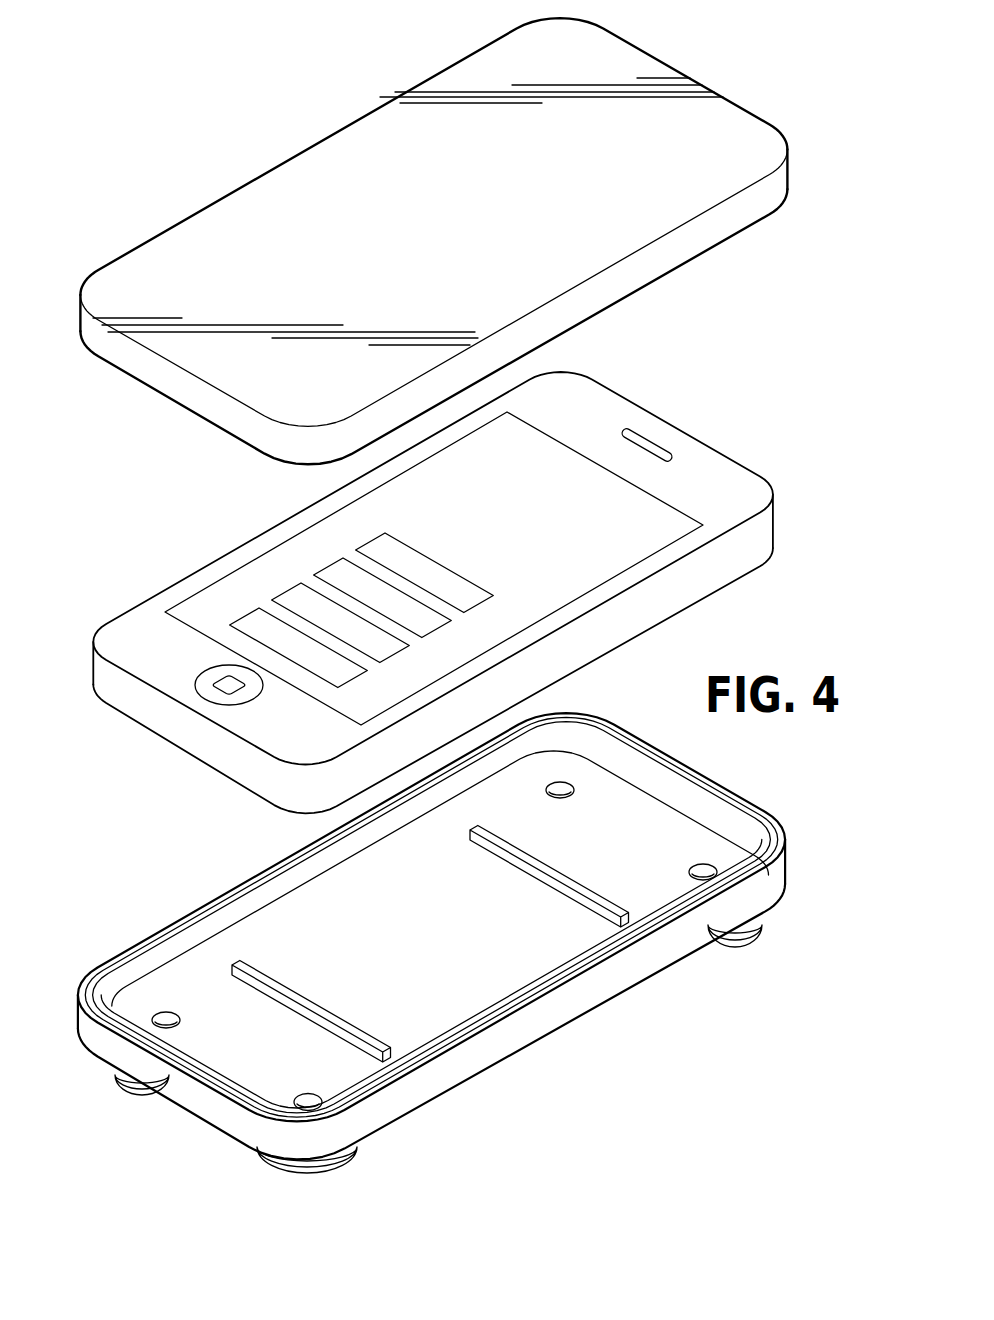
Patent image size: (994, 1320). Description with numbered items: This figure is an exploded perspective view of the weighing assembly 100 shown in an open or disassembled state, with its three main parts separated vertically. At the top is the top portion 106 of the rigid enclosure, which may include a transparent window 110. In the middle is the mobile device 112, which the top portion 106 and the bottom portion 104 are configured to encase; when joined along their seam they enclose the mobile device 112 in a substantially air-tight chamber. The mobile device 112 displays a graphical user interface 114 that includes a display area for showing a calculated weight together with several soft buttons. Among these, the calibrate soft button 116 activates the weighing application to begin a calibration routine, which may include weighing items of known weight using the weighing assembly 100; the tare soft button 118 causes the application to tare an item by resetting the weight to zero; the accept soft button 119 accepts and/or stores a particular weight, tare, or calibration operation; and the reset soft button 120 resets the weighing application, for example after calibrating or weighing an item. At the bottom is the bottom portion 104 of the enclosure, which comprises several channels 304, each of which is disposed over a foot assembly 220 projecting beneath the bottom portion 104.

The weighing assembly 100 is at (222, 139).
The bottom portion 104 is at (791, 860).
The top portion 106 is at (793, 168).
The transparent window 110 is at (726, 133).
The mobile device 112 is at (777, 521).
The graphical user interface 114 is at (258, 557).
The calibrate soft button 116 is at (364, 674).
The tare soft button 118 is at (272, 600).
The accept soft button 119 is at (441, 629).
The reset soft button 120 is at (355, 550).
The foot assembly 220 is at (136, 1095).
The channels 304 is at (561, 797).